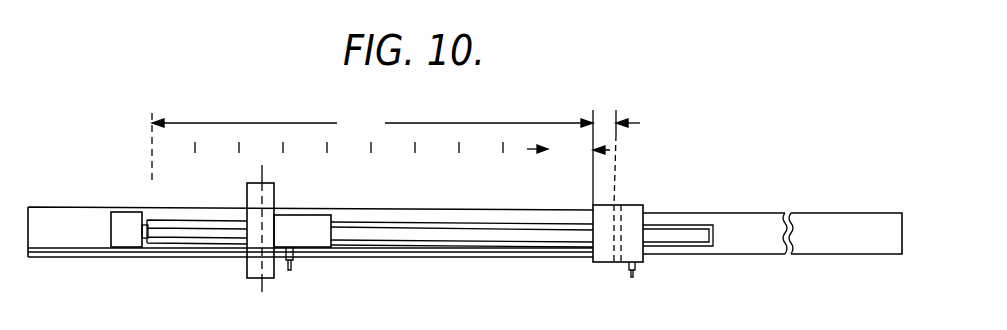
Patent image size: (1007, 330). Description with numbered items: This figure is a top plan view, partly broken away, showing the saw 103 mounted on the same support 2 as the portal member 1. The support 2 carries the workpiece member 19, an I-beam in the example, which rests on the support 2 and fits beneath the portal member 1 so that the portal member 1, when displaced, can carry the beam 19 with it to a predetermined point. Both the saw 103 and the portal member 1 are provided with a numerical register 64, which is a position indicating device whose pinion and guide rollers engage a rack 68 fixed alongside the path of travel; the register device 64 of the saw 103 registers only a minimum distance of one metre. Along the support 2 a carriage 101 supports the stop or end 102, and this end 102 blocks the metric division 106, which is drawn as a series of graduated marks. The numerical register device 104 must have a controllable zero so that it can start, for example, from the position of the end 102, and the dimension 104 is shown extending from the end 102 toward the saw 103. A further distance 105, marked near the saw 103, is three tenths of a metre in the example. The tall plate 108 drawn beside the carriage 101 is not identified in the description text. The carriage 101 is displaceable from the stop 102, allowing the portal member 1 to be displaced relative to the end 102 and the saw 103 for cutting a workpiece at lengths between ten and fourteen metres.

The portal member 1 is at (318, 222).
The support 2 is at (77, 213).
The workpiece member 19 is at (488, 232).
The position indicating device 64 is at (289, 271).
The rack 68 is at (370, 258).
The carriage 101 is at (120, 243).
The stop or end 102 is at (147, 242).
The saw 103 is at (633, 247).
The numerical register device 104 is at (372, 157).
The distance 105 is at (610, 122).
The metric division 106 is at (555, 147).
The indicator plate 108 is at (262, 292).